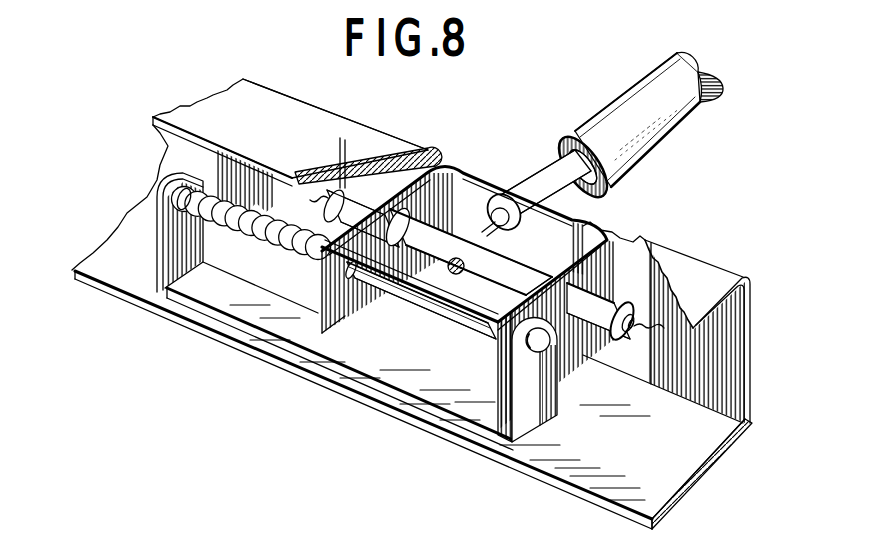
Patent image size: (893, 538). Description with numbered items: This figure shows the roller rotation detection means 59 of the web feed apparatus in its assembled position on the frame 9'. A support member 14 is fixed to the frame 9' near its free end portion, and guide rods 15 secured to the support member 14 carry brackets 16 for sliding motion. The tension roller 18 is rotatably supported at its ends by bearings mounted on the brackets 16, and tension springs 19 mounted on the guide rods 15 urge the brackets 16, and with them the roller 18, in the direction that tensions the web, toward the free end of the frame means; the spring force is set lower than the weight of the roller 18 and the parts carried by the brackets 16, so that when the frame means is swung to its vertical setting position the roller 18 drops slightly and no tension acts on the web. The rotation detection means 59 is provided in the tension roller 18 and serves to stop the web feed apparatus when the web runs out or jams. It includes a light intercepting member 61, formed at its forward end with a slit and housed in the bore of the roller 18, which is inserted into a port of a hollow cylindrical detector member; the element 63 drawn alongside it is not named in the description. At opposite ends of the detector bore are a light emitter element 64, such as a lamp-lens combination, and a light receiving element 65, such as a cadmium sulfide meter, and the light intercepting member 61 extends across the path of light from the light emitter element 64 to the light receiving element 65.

The frame 9' is at (416, 304).
The support member 14 is at (173, 296).
The guide rod 15 is at (440, 279).
The bracket 16 is at (343, 324).
The tension roller 18 is at (678, 138).
The tension spring 19 is at (223, 232).
The rotation detection means 59 is at (467, 270).
The light intercepting member 61 is at (457, 274).
The roller shaft 63 is at (444, 272).
The light emitter element 64 is at (598, 343).
The light receiving element 65 is at (380, 160).